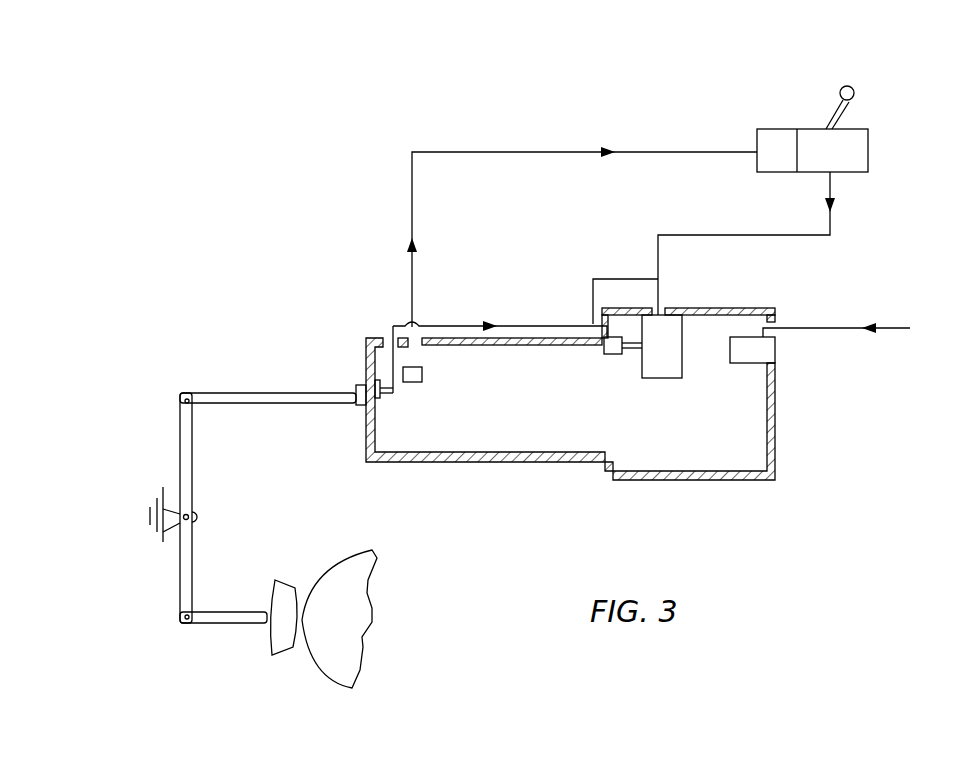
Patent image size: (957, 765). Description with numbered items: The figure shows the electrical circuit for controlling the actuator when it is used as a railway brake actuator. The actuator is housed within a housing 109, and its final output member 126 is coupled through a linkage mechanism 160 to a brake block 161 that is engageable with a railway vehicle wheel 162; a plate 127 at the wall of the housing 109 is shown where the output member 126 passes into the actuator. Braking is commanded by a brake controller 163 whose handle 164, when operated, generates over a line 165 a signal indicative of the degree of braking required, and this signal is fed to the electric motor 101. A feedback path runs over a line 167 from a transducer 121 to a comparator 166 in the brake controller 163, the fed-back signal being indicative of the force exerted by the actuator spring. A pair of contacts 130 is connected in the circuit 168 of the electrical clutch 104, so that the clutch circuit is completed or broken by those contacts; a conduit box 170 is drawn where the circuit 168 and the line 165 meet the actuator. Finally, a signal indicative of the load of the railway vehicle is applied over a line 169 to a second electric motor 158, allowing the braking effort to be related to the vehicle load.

The electric motor 101 is at (678, 360).
The electrical clutch 104 is at (615, 355).
The housing 109 is at (561, 462).
The transducer 121 is at (423, 375).
The final output member 126 is at (353, 412).
The plate 127 is at (367, 383).
The pair of contacts 130 is at (393, 396).
The second electric motor 158 is at (752, 352).
The linkage mechanism 160 is at (172, 538).
The brake block 161 is at (275, 633).
The railway vehicle wheel 162 is at (355, 568).
The brake controller 163 is at (816, 113).
The handle 164 is at (843, 112).
The line 165 is at (756, 236).
The comparator 166 is at (777, 140).
The line 167 is at (567, 150).
The circuit 168 is at (523, 322).
The line 169 is at (800, 331).
The conduit box 170 is at (630, 277).